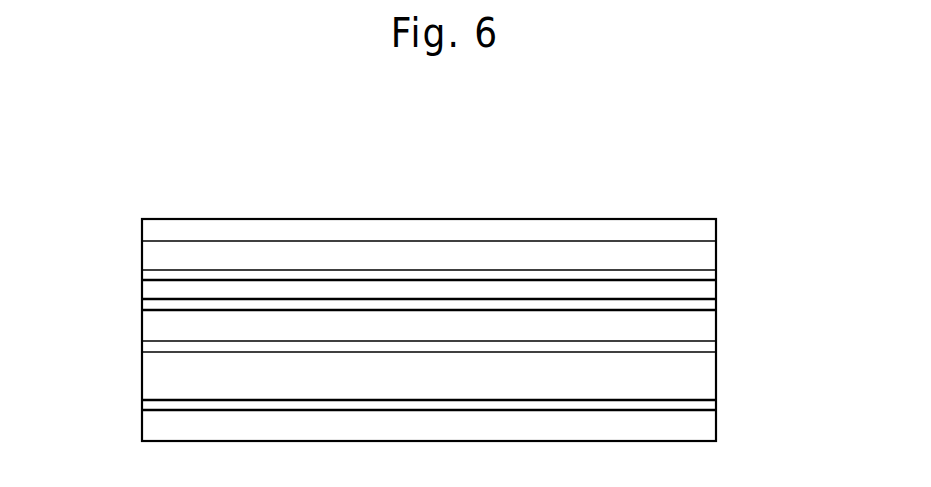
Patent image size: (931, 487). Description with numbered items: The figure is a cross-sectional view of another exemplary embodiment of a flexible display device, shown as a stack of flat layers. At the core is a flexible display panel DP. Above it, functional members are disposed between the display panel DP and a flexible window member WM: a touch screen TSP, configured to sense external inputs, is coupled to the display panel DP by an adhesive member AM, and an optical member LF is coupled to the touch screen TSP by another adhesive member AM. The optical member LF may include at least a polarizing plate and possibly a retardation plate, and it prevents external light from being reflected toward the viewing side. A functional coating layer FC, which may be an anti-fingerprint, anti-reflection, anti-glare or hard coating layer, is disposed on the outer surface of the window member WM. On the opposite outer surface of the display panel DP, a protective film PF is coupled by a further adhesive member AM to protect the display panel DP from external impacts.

The flexible window member WM is at (609, 188).
The functional coating layer FC is at (705, 232).
The adhesive member AM is at (150, 275).
The optical member LF is at (705, 291).
The touch screen TSP is at (705, 327).
The flexible display panel DP is at (705, 377).
The protective film PF is at (705, 427).